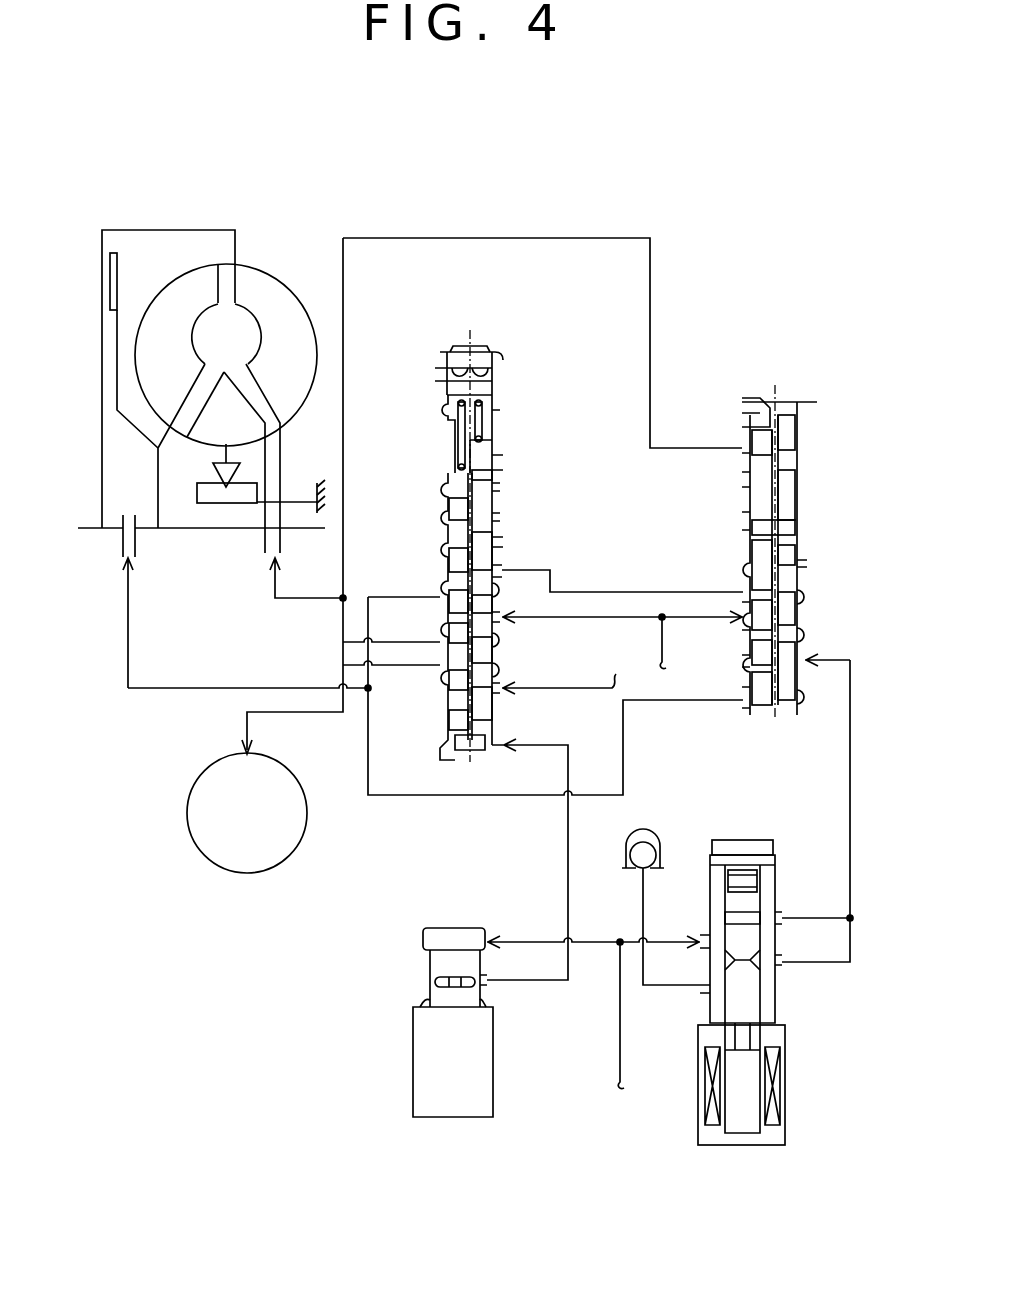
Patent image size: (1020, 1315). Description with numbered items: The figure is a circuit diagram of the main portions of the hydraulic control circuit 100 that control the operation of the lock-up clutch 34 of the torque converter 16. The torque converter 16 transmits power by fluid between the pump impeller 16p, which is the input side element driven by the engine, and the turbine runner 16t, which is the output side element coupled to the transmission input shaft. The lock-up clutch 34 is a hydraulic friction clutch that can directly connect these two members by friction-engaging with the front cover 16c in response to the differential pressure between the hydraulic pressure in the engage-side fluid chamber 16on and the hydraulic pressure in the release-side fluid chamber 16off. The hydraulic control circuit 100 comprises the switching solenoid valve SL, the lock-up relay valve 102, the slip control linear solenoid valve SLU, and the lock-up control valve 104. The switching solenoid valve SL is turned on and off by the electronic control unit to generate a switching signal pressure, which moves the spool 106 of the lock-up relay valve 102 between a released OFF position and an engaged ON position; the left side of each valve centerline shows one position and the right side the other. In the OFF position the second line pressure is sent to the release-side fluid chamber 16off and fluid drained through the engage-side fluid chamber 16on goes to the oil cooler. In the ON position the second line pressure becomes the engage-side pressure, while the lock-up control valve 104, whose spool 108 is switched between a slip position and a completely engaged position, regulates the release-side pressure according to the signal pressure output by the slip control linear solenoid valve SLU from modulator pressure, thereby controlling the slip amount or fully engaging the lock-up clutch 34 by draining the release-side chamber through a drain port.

The torque converter 16 is at (278, 211).
The engage-side fluid chamber 16on is at (140, 250).
The turbine runner 16t is at (203, 285).
The front cover 16c is at (102, 272).
The pump impeller 16p is at (290, 302).
The lock-up clutch 34 is at (110, 292).
The release-side fluid chamber 16off is at (105, 468).
The hydraulic control circuit 100 is at (156, 1004).
The lock-up relay valve 102 is at (471, 326).
The lock-up control valve 104 is at (775, 378).
The spool 106 is at (453, 722).
The spool 108 is at (792, 538).
The switching solenoid valve SL is at (514, 1070).
The slip control linear solenoid valve SLU is at (802, 1030).